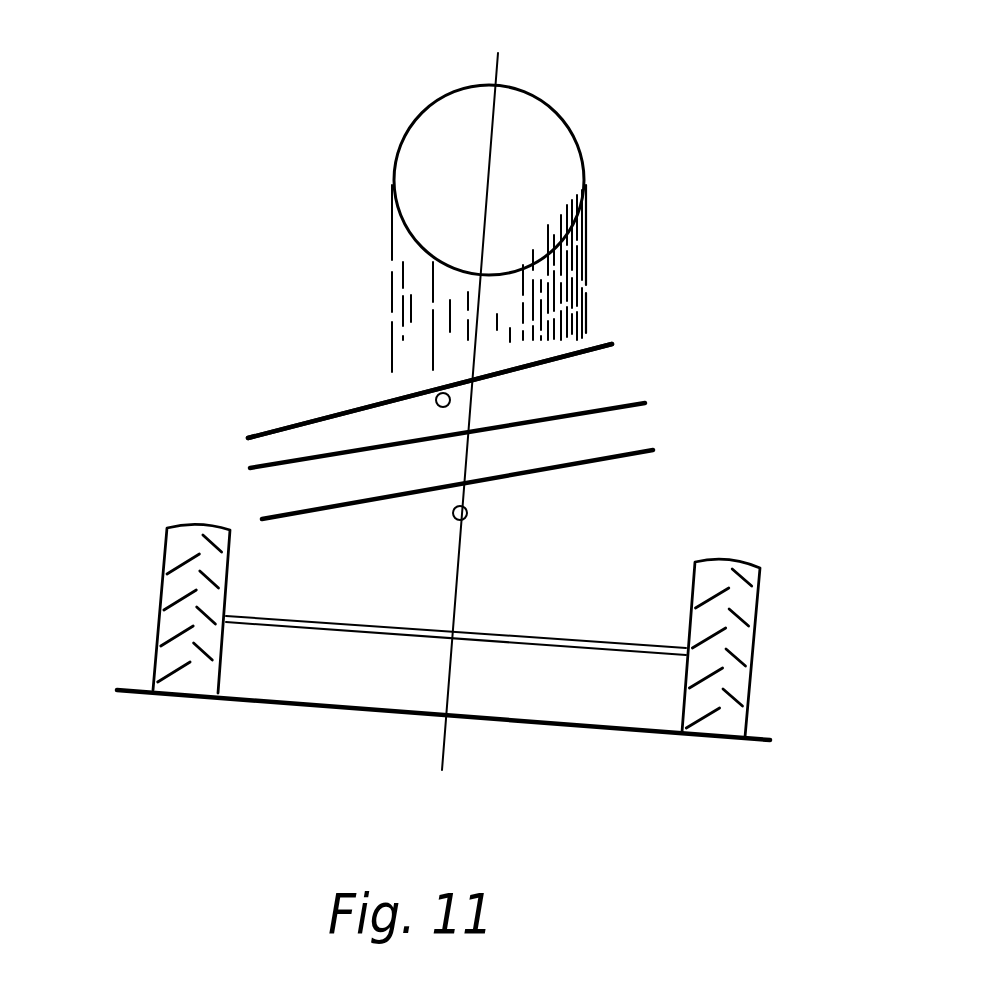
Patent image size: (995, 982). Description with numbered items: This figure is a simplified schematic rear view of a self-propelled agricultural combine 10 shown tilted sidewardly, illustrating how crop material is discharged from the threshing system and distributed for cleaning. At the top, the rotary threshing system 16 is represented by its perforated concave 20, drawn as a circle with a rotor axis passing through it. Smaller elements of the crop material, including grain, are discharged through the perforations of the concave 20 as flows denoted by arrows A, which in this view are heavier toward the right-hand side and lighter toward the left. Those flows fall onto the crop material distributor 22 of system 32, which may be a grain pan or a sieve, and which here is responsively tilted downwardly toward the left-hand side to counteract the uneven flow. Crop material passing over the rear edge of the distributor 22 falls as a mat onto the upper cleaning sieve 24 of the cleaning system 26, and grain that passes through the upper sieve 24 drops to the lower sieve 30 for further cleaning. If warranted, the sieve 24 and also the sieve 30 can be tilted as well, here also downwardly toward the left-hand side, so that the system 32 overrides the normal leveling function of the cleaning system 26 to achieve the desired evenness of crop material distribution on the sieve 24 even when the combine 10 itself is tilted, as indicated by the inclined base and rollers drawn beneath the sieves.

The self-propelled agricultural combine 10 is at (743, 137).
The rotary threshing system 16 is at (563, 118).
The perforated concave 20 is at (392, 163).
The crop material flow arrows A is at (586, 253).
The crop material distributor 22 is at (333, 417).
The system 32 is at (430, 391).
The upper cleaning sieve 24 is at (273, 465).
The cleaning system 26 is at (662, 427).
The lower sieve 30 is at (273, 517).